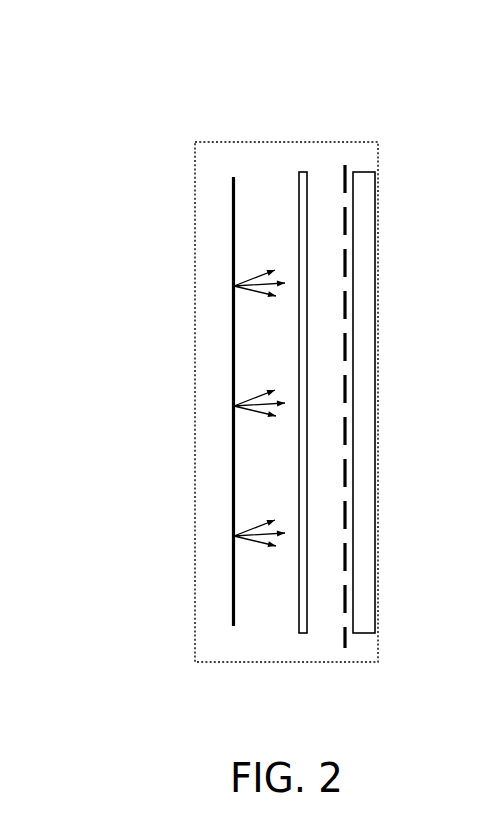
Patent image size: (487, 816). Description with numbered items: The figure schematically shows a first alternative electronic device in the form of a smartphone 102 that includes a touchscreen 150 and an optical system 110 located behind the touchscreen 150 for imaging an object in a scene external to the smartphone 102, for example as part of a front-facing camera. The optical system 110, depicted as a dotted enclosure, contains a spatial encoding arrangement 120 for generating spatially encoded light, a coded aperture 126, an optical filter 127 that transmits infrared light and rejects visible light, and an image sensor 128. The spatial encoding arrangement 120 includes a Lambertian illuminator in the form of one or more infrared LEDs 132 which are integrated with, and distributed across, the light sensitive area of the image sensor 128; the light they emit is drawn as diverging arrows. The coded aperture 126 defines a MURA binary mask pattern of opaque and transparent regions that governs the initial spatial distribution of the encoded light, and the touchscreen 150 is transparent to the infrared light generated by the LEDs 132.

The smartphone 102 is at (143, 623).
The optical system 110 is at (213, 640).
The spatial encoding arrangement 120 is at (269, 168).
The coded aperture 126 is at (344, 158).
The optical filter 127 is at (301, 172).
The image sensor 128 is at (232, 240).
The infrared LEDs 132 is at (234, 286).
The touchscreen 150 is at (363, 191).